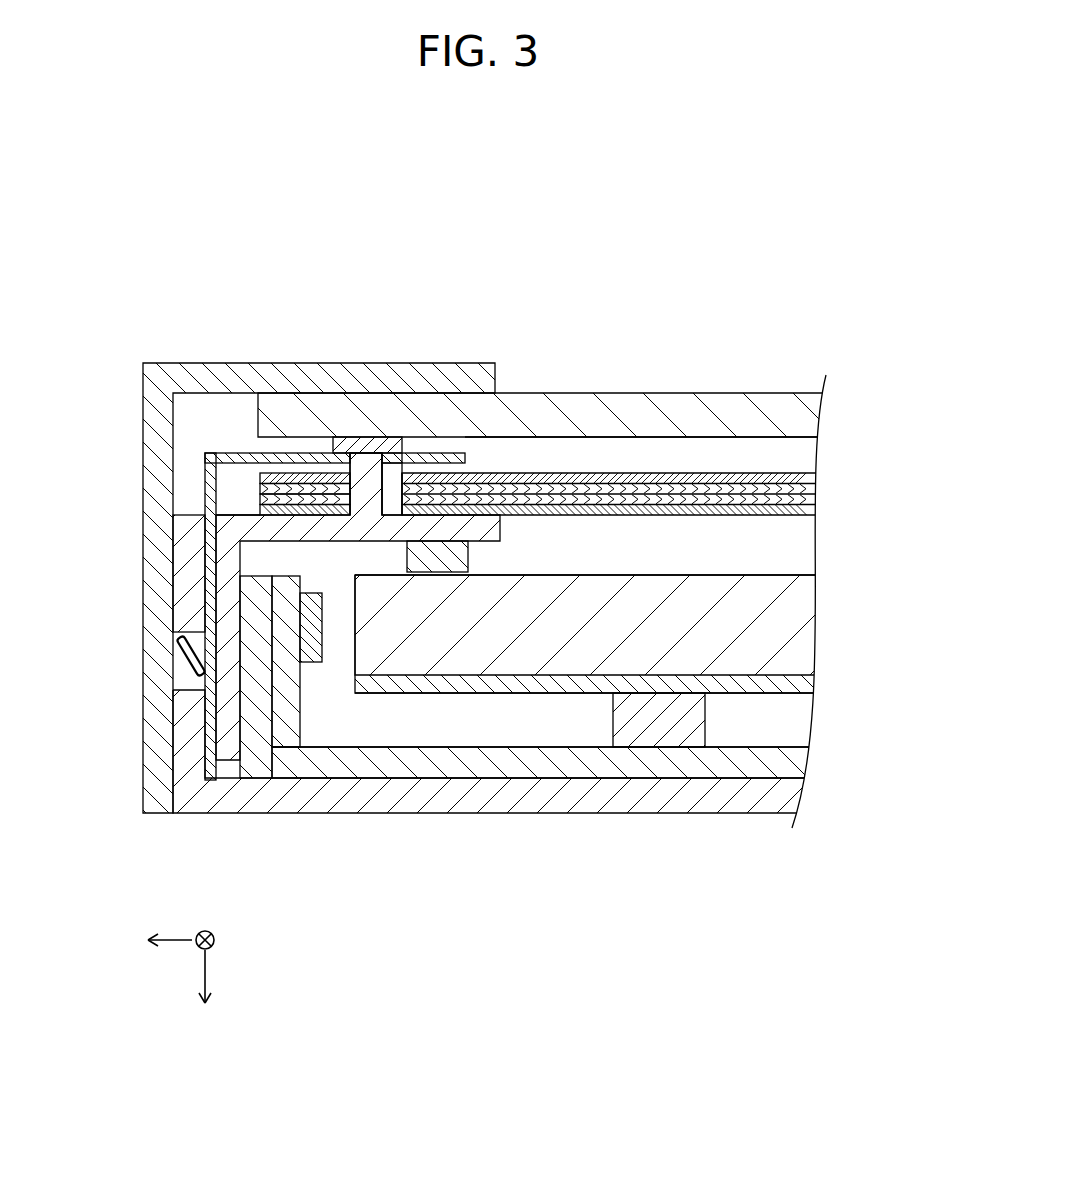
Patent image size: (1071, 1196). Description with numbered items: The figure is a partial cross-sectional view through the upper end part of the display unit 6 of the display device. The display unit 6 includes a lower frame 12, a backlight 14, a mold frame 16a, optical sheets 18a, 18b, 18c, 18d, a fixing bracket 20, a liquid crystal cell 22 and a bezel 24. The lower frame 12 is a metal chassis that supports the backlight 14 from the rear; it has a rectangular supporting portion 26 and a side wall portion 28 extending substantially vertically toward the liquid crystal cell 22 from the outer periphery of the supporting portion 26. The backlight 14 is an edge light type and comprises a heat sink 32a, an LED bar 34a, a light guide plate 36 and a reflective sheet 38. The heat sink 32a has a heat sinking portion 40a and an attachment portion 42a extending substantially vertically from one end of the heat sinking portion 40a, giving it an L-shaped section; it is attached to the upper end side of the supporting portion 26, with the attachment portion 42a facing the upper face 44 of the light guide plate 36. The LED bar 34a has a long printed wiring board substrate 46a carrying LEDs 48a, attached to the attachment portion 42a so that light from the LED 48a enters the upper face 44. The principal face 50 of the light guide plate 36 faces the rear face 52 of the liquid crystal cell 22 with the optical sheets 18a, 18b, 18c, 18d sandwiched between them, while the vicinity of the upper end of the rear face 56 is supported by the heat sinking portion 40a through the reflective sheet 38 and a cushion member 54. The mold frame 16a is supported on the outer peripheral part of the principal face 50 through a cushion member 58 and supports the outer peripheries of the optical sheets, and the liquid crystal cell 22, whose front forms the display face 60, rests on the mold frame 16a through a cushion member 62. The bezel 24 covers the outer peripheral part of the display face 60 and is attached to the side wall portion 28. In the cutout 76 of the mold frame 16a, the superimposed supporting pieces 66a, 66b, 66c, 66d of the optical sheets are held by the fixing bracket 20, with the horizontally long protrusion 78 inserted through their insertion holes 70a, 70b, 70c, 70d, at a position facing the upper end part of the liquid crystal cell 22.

The display unit 6 is at (677, 248).
The lower frame 12 is at (408, 797).
The backlight 14 is at (780, 700).
The mold frame 16a is at (229, 748).
The optical sheet 18a is at (733, 508).
The optical sheet 18b is at (790, 498).
The optical sheet 18c is at (790, 488).
The optical sheet 18d is at (735, 473).
The fixing bracket 20 is at (210, 488).
The liquid crystal cell 22 is at (637, 392).
The bezel 24 is at (157, 427).
The supporting portion 26 is at (558, 802).
The side wall portion 28 is at (183, 572).
The heat sink 32a is at (498, 762).
The LED bar 34a is at (288, 742).
The light guide plate 36 is at (800, 642).
The reflective sheet 38 is at (800, 682).
The heat sinking portion 40a is at (652, 765).
The attachment portion 42a is at (252, 632).
The upper face 44 is at (352, 623).
The substrate 46a is at (282, 716).
The LED 48a is at (308, 658).
The principal face 50 is at (638, 572).
The rear face 52 is at (578, 440).
The cushion member 54 is at (613, 720).
The rear face 56 is at (455, 678).
The cushion member 58 is at (468, 562).
The display face 60 is at (703, 392).
The cushion member 62 is at (367, 465).
The supporting piece 66a is at (260, 508).
The supporting piece 66b is at (260, 498).
The supporting piece 66c is at (288, 488).
The supporting piece 66d is at (305, 478).
The insertion hole 70a is at (400, 521).
The insertion hole 70b is at (403, 497).
The insertion hole 70c is at (403, 486).
The insertion hole 70d is at (403, 475).
The cutout 76 is at (233, 513).
The protrusion 78 is at (393, 470).